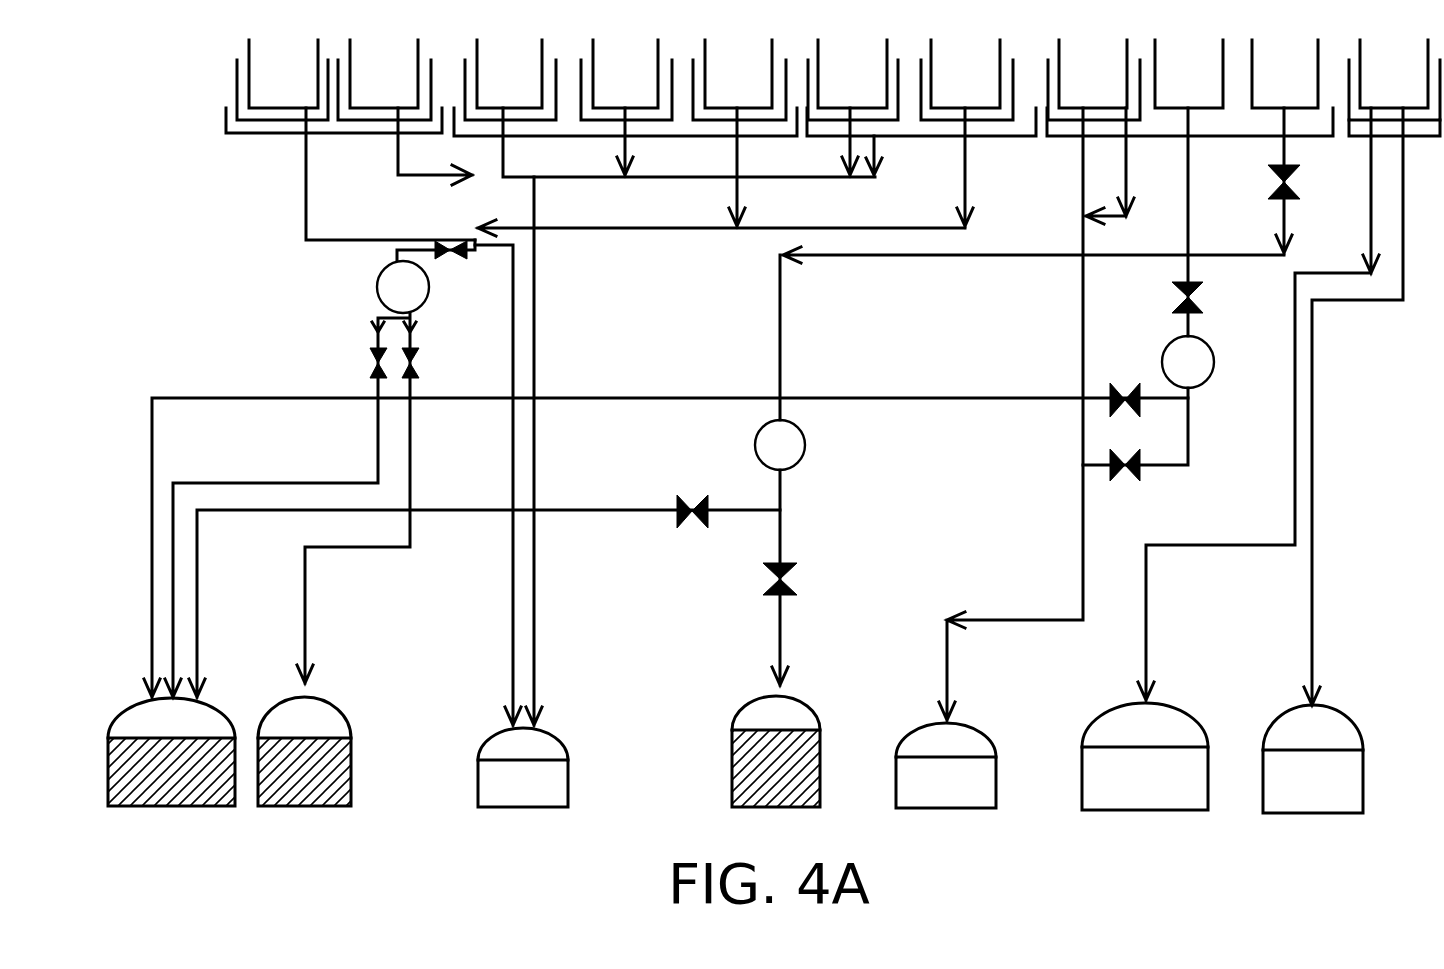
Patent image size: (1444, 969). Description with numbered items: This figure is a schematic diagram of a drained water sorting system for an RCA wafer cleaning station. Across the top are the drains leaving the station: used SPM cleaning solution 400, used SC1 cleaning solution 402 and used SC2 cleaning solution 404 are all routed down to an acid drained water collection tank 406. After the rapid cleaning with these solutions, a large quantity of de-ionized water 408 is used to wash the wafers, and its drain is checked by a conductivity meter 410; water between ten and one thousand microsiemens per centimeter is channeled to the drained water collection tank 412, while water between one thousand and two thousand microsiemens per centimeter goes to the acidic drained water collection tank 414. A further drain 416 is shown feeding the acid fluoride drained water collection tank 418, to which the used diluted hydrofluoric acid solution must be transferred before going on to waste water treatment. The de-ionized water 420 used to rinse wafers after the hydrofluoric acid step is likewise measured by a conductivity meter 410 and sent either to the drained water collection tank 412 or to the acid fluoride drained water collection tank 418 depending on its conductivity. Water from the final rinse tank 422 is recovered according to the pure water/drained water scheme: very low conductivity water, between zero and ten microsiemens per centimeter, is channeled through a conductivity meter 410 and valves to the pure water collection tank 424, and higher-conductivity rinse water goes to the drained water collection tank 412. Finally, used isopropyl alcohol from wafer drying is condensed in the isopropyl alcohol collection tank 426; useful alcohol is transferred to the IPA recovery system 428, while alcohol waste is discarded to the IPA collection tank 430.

The used SPM cleaning solution 400 is at (356, 140).
The used SC1 cleaning solution 402 is at (670, 382).
The used SC2 cleaning solution 404 is at (853, 107).
The acid drained water collection tank 406 is at (523, 767).
The de-ionized water 408 is at (675, 138).
The conductivity meter 410 is at (422, 303).
The drained water collection tank 412 is at (171, 752).
The acidic drained water collection tank 414 is at (304, 751).
The input station 416 is at (1039, 380).
The acid fluoride drained water collection tank 418 is at (946, 765).
The de-ionized water 420 is at (1153, 260).
The final rinse (FR) tank 422 is at (1050, 151).
The pure water collection tank 424 is at (776, 751).
The isopropyl alcohol (IPA) collection tank 426 is at (1289, 372).
The IPA recovery system 428 is at (1145, 756).
The IPA collection tank 430 is at (1313, 759).